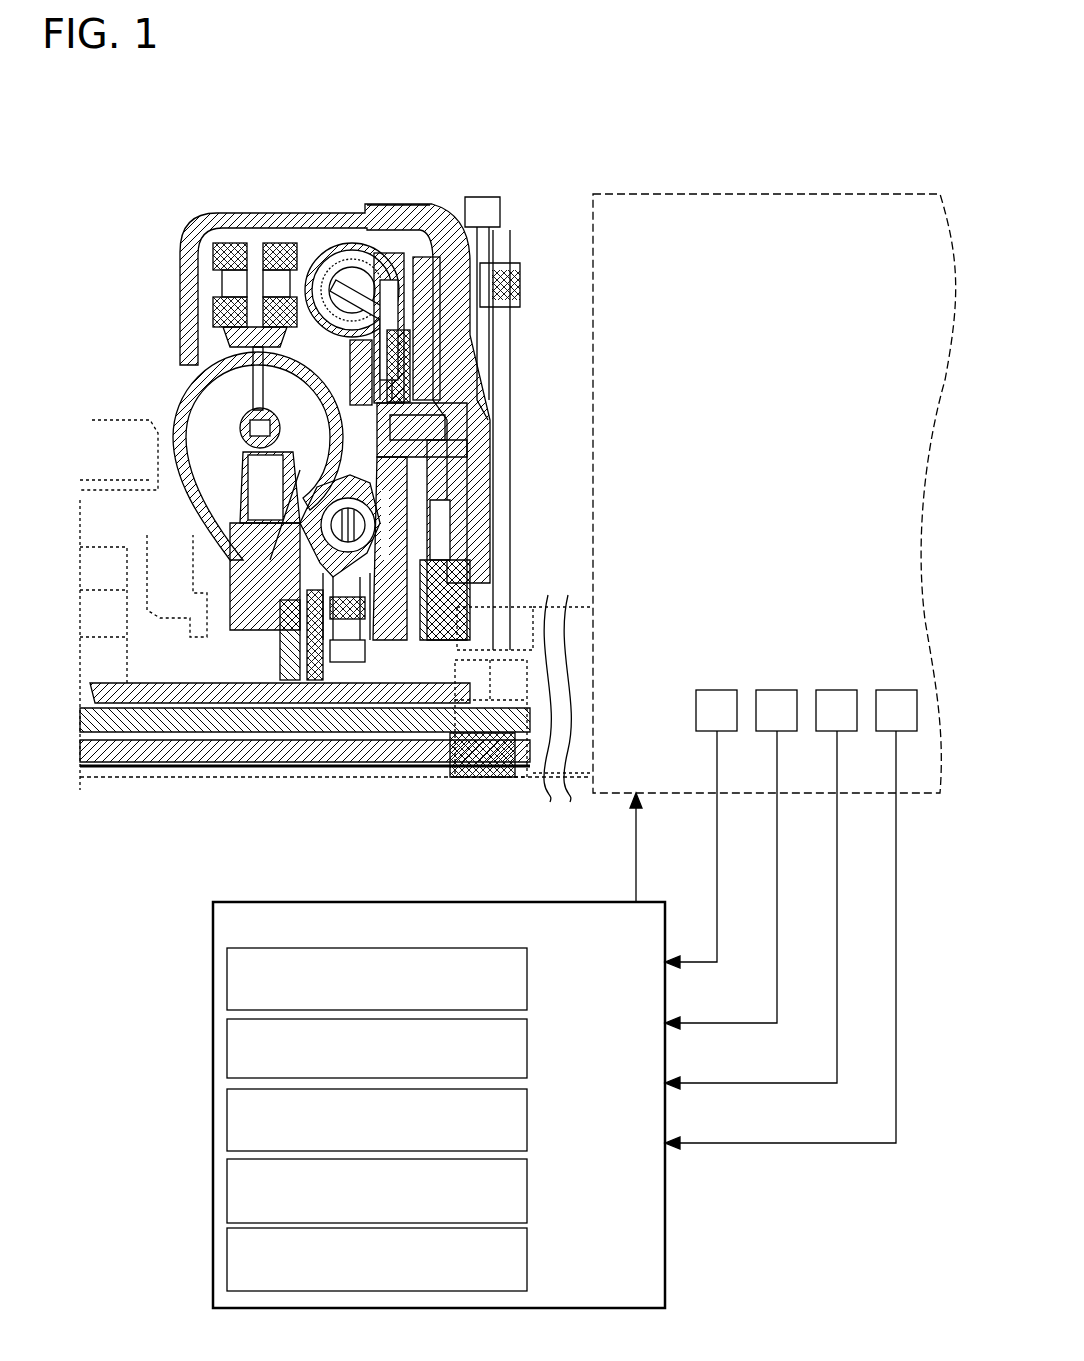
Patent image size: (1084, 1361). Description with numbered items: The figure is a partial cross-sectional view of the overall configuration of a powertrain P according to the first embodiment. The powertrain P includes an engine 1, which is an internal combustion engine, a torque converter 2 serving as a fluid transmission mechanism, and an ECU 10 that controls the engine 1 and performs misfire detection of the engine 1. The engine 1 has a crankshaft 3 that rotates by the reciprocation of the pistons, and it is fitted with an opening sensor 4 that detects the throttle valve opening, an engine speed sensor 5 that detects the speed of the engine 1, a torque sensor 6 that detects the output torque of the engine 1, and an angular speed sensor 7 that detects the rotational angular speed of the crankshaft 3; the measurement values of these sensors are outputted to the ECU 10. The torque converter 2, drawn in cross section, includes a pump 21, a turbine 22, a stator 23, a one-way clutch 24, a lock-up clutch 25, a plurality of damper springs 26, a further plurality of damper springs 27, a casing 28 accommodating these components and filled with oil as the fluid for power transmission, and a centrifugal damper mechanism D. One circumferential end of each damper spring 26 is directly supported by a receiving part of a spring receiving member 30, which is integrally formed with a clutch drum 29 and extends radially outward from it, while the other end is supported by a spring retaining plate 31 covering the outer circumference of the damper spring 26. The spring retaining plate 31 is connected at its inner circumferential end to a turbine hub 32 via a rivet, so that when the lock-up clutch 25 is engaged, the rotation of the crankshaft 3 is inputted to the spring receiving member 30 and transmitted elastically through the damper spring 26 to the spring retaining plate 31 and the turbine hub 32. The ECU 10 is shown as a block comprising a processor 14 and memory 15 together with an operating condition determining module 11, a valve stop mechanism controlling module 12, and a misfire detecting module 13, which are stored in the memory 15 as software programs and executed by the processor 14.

The powertrain P is at (655, 120).
The engine 1 is at (765, 194).
The torque converter 2 is at (432, 205).
The crankshaft 3 is at (505, 604).
The opening sensor 4 is at (716, 690).
The engine speed sensor 5 is at (776, 690).
The torque sensor 6 is at (836, 690).
The angular speed sensor 7 is at (896, 690).
The ECU 10 is at (475, 902).
The operating condition determining module 11 is at (528, 978).
The valve stop mechanism controlling module 12 is at (528, 1048).
The misfire detecting module 13 is at (528, 1120).
The processor 14 is at (528, 1190).
The memory 15 is at (528, 1260).
The pump 21 is at (185, 380).
The turbine 22 is at (278, 329).
The stator 23 is at (245, 490).
The one-way clutch 24 is at (262, 655).
The lock-up clutch 25 is at (416, 393).
The damper springs 26 is at (355, 262).
The damper springs 27 is at (357, 512).
The casing 28 is at (395, 210).
The clutch drum 29 is at (420, 372).
The spring receiving member 30 is at (430, 352).
The spring retaining plate 31 is at (312, 262).
The turbine hub 32 is at (338, 737).
The centrifugal damper mechanism D is at (340, 250).